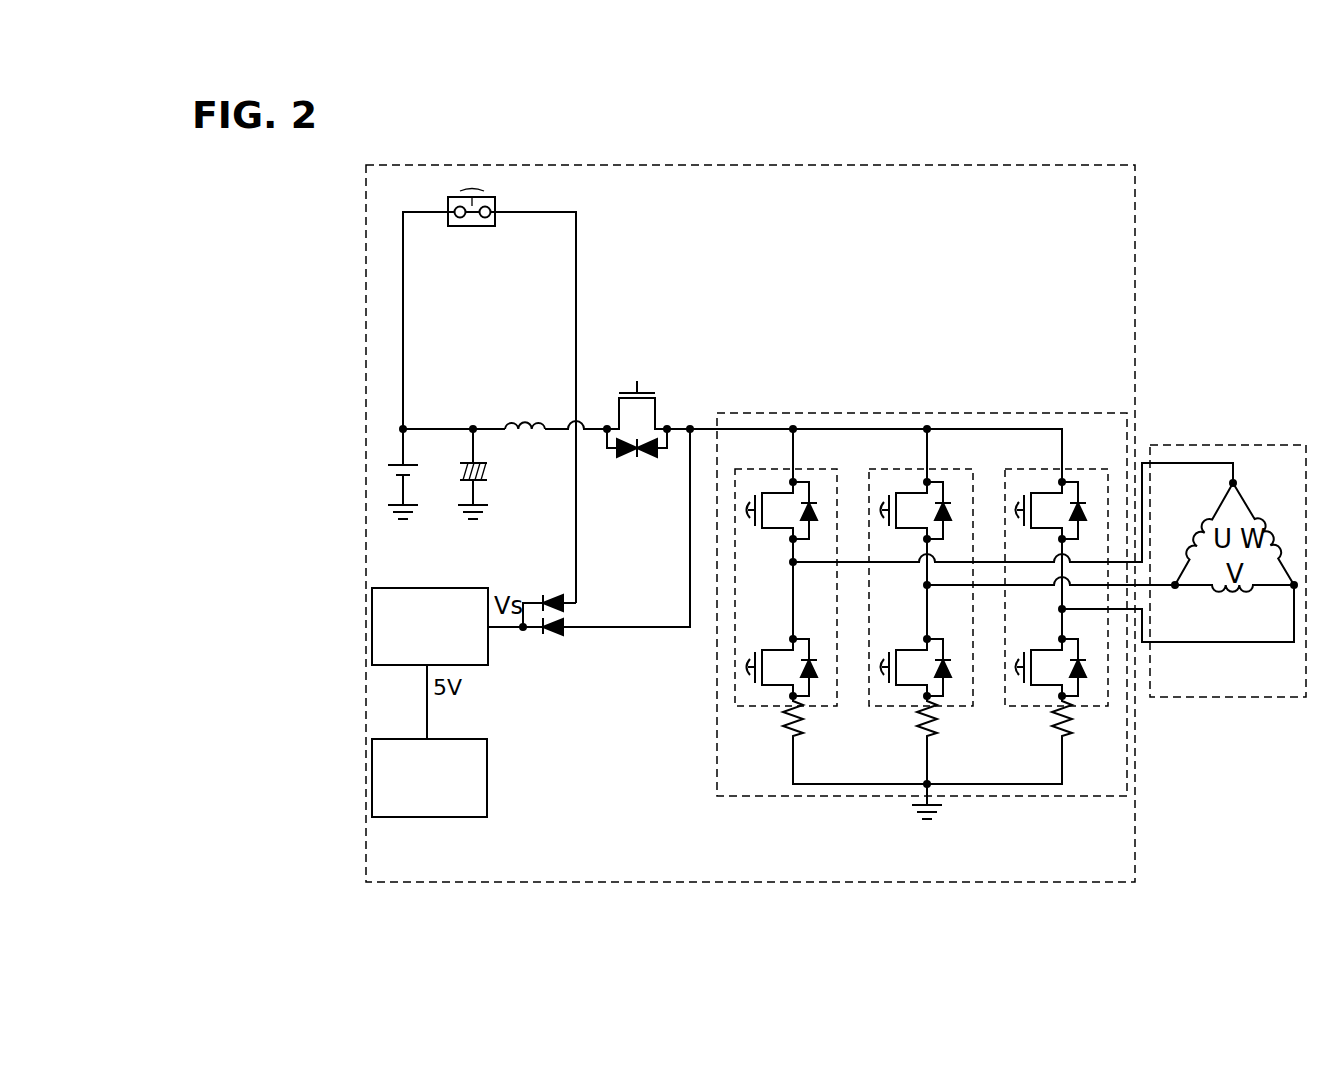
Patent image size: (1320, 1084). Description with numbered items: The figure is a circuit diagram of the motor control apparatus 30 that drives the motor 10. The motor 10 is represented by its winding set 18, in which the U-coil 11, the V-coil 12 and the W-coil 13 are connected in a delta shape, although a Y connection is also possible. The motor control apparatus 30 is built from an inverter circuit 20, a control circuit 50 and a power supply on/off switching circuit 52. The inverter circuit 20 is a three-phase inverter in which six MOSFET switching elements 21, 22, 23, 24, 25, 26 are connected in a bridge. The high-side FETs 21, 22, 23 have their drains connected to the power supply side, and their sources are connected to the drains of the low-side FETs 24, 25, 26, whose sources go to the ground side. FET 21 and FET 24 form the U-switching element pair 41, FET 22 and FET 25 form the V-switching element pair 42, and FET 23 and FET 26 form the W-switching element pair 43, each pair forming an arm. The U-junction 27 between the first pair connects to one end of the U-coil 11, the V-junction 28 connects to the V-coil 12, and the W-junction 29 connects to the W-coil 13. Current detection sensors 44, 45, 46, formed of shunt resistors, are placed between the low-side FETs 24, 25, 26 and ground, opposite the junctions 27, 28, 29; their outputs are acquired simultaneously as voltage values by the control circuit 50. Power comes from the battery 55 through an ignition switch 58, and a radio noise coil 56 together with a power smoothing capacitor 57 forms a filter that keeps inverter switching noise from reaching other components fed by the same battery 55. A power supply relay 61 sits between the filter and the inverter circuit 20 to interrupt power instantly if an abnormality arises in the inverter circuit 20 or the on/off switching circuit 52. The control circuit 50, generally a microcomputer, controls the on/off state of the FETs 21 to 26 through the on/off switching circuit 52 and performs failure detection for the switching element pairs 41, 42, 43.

The motor 10 is at (1212, 697).
The U-coil 11 is at (1192, 528).
The V-coil 12 is at (1218, 598).
The W-coil 13 is at (1265, 520).
The winding set 18 is at (1276, 602).
The inverter circuit 20 is at (1038, 413).
The switching element (FET) 21 is at (812, 526).
The switching element (FET) 22 is at (946, 526).
The switching element (FET) 23 is at (1081, 526).
The switching element (FET) 24 is at (813, 660).
The switching element (FET) 25 is at (948, 660).
The switching element (FET) 26 is at (1083, 660).
The U-junction 27 is at (793, 562).
The V-junction 28 is at (927, 585).
The W-junction 29 is at (1062, 609).
The motor control apparatus 30 is at (697, 882).
The U-switching element pair 41 is at (805, 467).
The V-switching element pair 42 is at (940, 467).
The W-switching element pair 43 is at (1073, 467).
The current detection sensor 44 is at (793, 745).
The current detection sensor 45 is at (927, 745).
The current detection sensor 46 is at (1062, 745).
The control circuit 50 is at (393, 817).
The power supply on/off switching circuit 52 is at (393, 665).
The battery 55 is at (410, 467).
The radio noise coil 56 is at (522, 413).
The power smoothing capacitor 57 is at (490, 465).
The ignition switch 58 is at (462, 228).
The power supply relay 61 is at (655, 415).